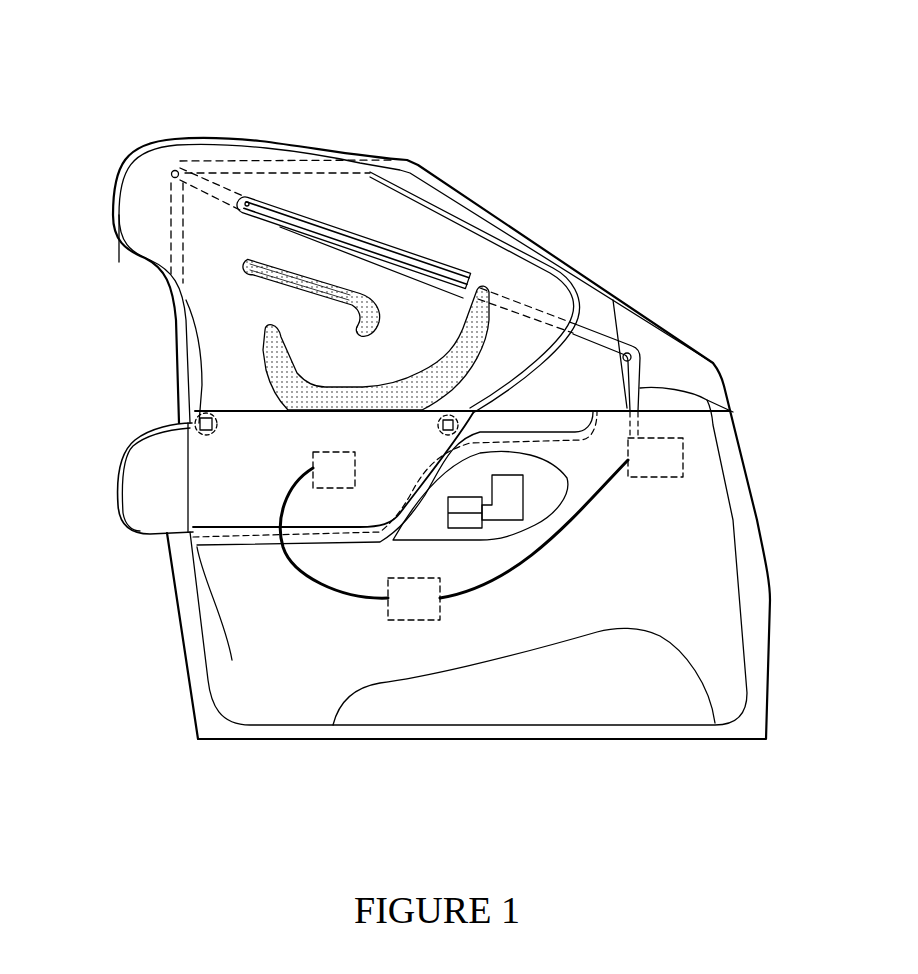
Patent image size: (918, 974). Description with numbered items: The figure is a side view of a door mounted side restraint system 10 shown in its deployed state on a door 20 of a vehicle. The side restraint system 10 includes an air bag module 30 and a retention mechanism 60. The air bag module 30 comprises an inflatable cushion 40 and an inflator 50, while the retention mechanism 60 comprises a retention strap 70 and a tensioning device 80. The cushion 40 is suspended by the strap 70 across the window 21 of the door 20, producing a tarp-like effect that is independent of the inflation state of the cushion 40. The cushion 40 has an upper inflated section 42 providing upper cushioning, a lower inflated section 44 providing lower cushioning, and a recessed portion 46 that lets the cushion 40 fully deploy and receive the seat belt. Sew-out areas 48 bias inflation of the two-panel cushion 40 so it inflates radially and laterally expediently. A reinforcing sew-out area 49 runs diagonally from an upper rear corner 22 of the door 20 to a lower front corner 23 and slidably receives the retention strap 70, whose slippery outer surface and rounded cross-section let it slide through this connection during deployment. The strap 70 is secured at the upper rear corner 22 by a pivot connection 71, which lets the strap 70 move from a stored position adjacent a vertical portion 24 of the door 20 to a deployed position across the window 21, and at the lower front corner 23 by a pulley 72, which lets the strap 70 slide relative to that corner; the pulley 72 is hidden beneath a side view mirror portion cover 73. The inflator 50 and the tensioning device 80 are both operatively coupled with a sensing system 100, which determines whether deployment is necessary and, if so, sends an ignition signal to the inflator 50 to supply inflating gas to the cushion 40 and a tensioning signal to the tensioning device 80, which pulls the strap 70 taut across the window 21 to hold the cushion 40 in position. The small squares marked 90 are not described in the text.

The side restraint system 10 is at (407, 63).
The door 20 is at (262, 741).
The window 21 is at (548, 391).
The upper rear corner 22 is at (181, 137).
The lower front corner 23 is at (643, 348).
The vertical portion 24 is at (176, 255).
The air bag module 30 is at (303, 457).
The inflatable cushion 40 is at (422, 223).
The upper inflated section 42 is at (131, 160).
The lower inflated section 44 is at (140, 512).
The recessed portion 46 is at (150, 345).
The sew-out areas 48 is at (310, 298).
The reinforcing sew-out area 49 is at (337, 222).
The inflator 50 is at (355, 467).
The retention mechanism 60 is at (597, 326).
The retention strap 70 is at (730, 411).
The pivot connection 71 is at (171, 174).
The pulley 72 is at (625, 361).
The side view mirror portion cover 73 is at (677, 375).
The tensioning device 80 is at (683, 453).
The fastener 90 is at (205, 432).
The sensing system 100 is at (407, 620).